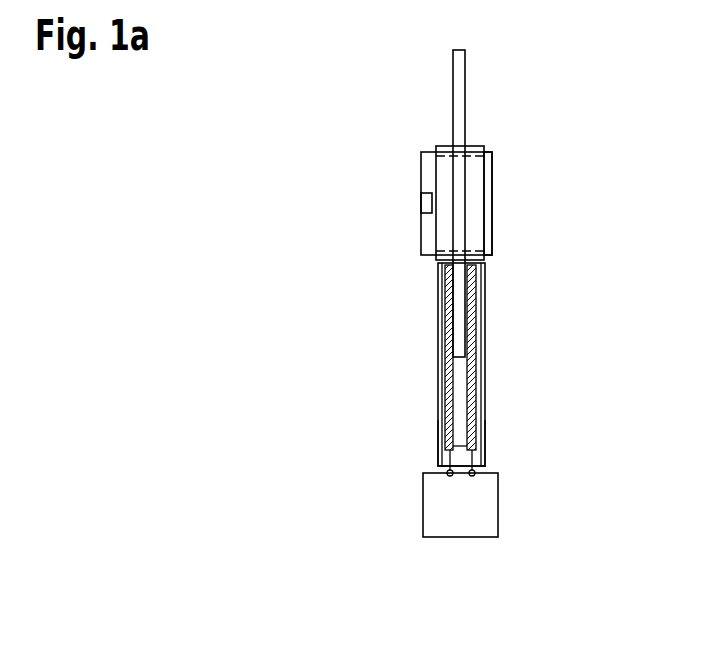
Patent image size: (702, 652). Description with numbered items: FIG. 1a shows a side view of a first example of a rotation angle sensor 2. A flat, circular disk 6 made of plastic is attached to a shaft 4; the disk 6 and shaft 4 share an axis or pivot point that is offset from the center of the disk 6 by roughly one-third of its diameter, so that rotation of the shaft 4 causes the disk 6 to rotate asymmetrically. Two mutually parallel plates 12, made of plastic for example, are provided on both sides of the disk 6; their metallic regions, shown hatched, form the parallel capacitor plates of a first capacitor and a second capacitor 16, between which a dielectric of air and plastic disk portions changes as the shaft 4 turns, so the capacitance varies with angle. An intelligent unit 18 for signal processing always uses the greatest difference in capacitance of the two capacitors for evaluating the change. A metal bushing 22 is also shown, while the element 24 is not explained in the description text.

The sensor assembly 2 is at (339, 533).
The housing 4 is at (403, 182).
The rod / actuator 6 is at (460, 84).
The electrodes 12 is at (436, 388).
The tube / sensor sleeve 16 is at (429, 437).
The evaluation unit 18 is at (508, 529).
The connector / window 22 is at (409, 213).
The housing wall 24 is at (497, 186).